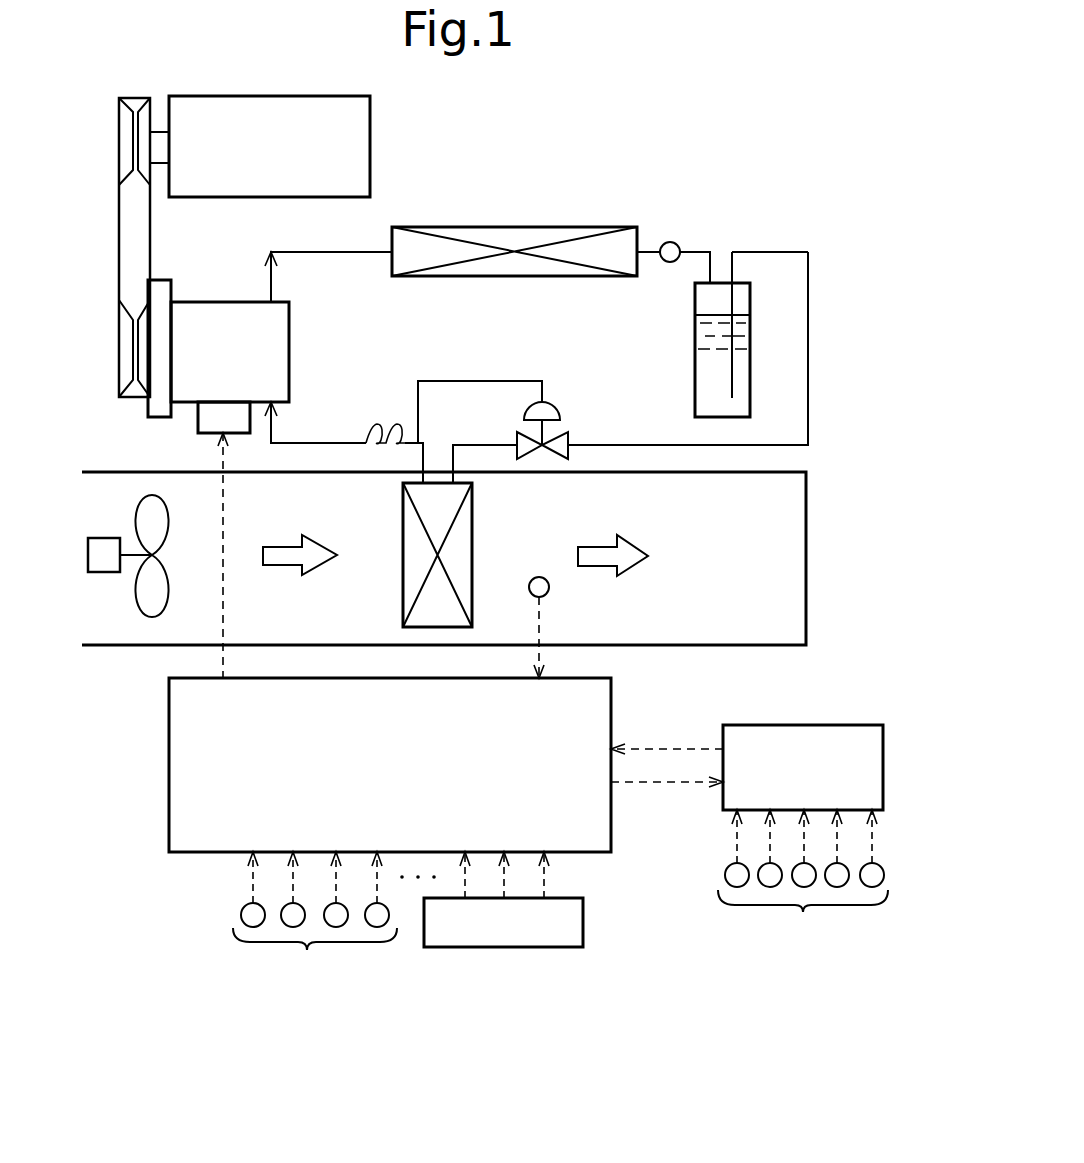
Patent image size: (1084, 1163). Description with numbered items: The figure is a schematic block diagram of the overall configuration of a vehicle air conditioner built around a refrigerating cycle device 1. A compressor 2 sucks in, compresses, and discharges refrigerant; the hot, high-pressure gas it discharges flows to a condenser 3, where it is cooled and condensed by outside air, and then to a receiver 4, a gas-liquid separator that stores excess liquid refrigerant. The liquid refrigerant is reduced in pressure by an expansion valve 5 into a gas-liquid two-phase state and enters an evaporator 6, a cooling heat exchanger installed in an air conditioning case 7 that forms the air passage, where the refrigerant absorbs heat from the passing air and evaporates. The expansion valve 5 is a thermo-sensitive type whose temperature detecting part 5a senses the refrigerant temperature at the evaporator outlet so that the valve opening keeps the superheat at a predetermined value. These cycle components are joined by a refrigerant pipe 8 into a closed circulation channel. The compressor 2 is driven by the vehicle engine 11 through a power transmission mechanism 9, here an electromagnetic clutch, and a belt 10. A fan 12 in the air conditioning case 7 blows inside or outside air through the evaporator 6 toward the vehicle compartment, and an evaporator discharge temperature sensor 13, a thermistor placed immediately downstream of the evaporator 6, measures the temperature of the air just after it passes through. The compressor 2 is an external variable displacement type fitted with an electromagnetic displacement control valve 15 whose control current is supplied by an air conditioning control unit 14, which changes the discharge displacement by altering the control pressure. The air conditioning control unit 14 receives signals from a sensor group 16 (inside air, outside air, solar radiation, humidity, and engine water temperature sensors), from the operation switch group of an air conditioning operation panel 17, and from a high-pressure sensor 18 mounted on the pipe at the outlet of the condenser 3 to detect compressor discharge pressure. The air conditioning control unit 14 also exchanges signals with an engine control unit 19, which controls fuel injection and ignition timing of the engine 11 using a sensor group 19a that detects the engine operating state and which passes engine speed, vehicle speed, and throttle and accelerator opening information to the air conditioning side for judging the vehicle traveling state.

The refrigerating cycle device 1 is at (745, 241).
The compressor 2 is at (283, 333).
The condenser 3 is at (515, 232).
The receiver 4 is at (703, 373).
The expansion valve 5 is at (568, 437).
The temperature detecting part 5a is at (378, 425).
The evaporator 6 is at (410, 521).
The air conditioning case 7 is at (100, 645).
The refrigerant pipe 8 is at (328, 253).
The power transmission mechanism 9 is at (147, 405).
The belt 10 is at (128, 253).
The engine 11 is at (367, 126).
The fan 12 is at (148, 508).
The evaporator discharge temperature sensor 13 is at (538, 577).
The air conditioning control unit 14 is at (169, 805).
The electromagnetic displacement control valve 15 is at (205, 428).
The sensor group 16 is at (334, 920).
The air conditioning operation panel 17 is at (588, 921).
The high-pressure sensor 18 is at (672, 241).
The engine control unit 19 is at (888, 770).
The sensor group 19a is at (803, 884).